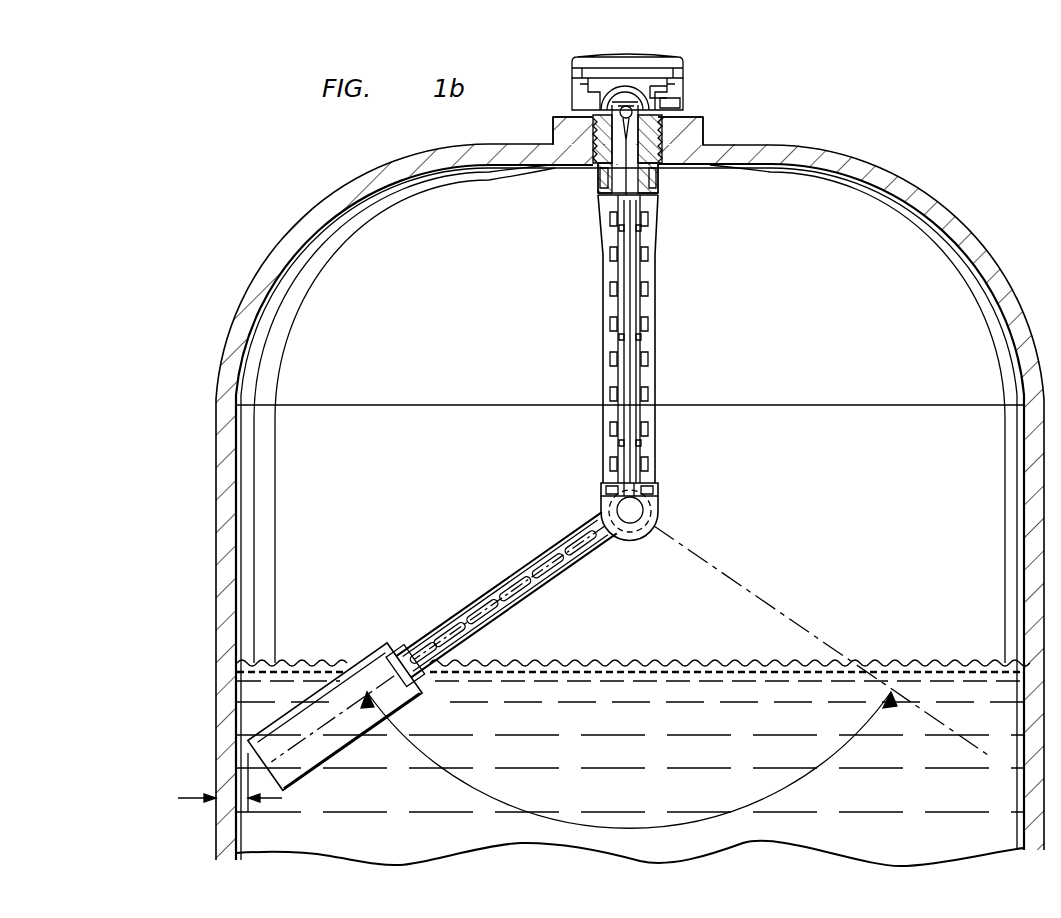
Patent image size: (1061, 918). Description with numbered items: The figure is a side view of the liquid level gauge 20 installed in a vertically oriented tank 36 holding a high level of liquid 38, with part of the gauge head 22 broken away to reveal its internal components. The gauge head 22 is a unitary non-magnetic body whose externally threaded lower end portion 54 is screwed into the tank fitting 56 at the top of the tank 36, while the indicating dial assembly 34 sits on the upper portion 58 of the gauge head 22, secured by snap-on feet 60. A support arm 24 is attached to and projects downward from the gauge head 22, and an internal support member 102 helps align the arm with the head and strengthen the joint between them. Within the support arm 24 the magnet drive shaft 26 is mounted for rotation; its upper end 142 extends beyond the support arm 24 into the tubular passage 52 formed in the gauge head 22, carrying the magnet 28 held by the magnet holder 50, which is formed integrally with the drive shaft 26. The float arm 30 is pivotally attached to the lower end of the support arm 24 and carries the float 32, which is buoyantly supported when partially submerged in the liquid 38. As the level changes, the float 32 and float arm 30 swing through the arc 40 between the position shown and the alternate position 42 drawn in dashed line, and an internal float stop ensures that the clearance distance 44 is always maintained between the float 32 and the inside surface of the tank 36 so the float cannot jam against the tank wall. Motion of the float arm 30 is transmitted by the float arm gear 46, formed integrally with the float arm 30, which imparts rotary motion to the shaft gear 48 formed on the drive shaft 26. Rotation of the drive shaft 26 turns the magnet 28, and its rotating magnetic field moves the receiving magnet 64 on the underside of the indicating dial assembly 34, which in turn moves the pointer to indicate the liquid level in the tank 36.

The liquid level gauge 20 is at (500, 248).
The gauge head 22 is at (572, 100).
The support arm 24 is at (603, 240).
The magnet drive shaft 26 is at (624, 305).
The magnet 28 is at (624, 100).
The float arm 30 is at (506, 581).
The float 32 is at (366, 656).
The indicating dial assembly 34 is at (572, 68).
The tank 36 is at (831, 146).
The liquid 38 is at (660, 660).
The arc 40 is at (672, 833).
The alternate position 42 is at (766, 601).
The clearance distance 44 is at (229, 783).
The float arm gear 46 is at (658, 522).
The shaft gear 48 is at (658, 490).
The magnet holder 50 is at (596, 128).
The tubular passage 52 is at (640, 160).
The lower end portion 54 is at (668, 138).
The tank fitting 56 is at (680, 135).
The upper portion 58 is at (672, 103).
The snap-on feet 60 is at (680, 88).
The receiving magnet 64 is at (640, 85).
The internal support member 102 is at (607, 189).
The upper end 142 is at (692, 207).